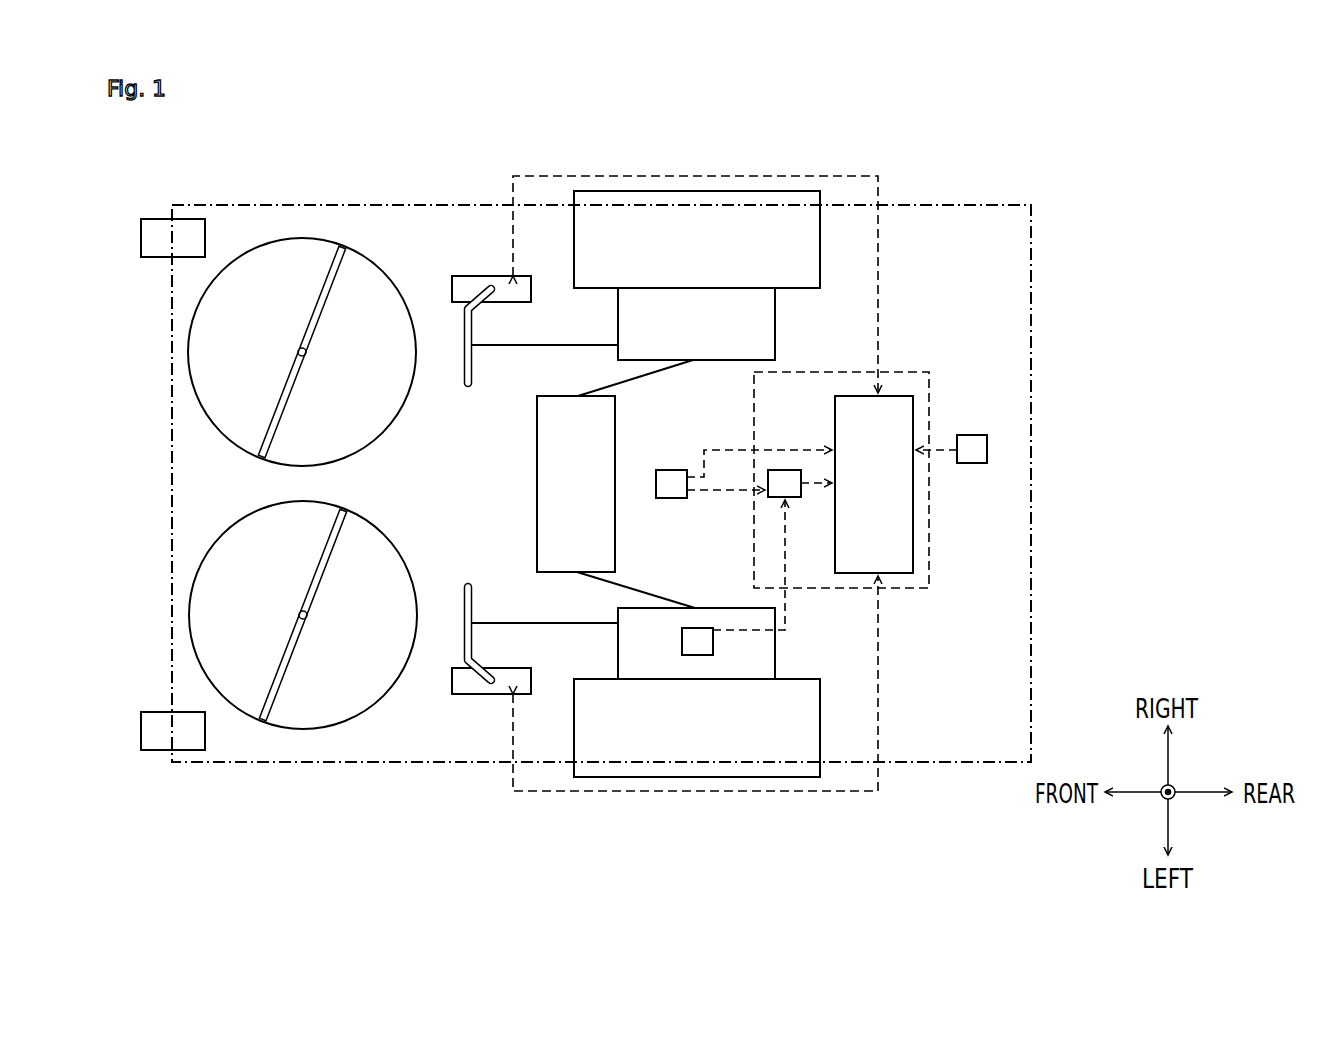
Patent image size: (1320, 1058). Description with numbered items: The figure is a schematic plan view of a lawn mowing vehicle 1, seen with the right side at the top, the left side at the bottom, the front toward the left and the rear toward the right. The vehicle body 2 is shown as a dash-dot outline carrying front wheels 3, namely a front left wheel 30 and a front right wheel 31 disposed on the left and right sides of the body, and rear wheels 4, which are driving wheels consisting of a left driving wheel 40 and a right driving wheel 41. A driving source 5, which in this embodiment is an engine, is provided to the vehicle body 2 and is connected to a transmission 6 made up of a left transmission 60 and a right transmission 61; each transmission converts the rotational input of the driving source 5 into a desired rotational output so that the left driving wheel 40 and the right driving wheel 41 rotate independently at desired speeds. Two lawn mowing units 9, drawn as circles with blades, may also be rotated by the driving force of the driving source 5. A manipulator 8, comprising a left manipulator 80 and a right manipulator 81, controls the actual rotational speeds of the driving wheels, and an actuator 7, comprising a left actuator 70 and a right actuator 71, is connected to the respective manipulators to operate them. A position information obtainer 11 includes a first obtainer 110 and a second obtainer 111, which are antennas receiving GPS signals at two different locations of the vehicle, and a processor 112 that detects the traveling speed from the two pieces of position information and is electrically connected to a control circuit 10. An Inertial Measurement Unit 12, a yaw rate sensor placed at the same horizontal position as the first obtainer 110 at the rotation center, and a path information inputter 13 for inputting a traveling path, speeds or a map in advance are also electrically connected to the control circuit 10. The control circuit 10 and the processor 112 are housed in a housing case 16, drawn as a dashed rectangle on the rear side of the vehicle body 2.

The vehicle 1 is at (1037, 152).
The vehicle body 2 is at (256, 205).
The front wheels 3 is at (161, 490).
The front left wheel 30 is at (150, 750).
The front right wheel 31 is at (152, 219).
The rear wheels 4 is at (695, 470).
The left driving wheel 40 is at (728, 781).
The right driving wheel 41 is at (753, 190).
The driving source 5 is at (537, 490).
The transmission 6 is at (737, 483).
The left transmission 60 is at (776, 650).
The right transmission 61 is at (776, 343).
The actuator 7 is at (478, 492).
The left actuator 70 is at (455, 694).
The right actuator 71 is at (458, 276).
The manipulator 8 is at (449, 484).
The left manipulator 80 is at (463, 597).
The right manipulator 81 is at (463, 363).
The lawn mowing units 9 is at (207, 418).
The control circuit 10 is at (913, 483).
The position information obtainer 11 is at (733, 613).
The first obtainer 110 is at (672, 498).
The second obtainer 111 is at (697, 657).
The processor 112 is at (775, 498).
The Inertial Measurement Unit 12 is at (682, 477).
The path information inputter 13 is at (972, 435).
The housing case 16 is at (897, 372).